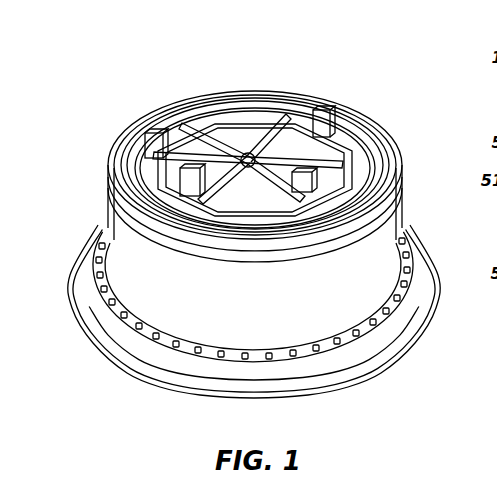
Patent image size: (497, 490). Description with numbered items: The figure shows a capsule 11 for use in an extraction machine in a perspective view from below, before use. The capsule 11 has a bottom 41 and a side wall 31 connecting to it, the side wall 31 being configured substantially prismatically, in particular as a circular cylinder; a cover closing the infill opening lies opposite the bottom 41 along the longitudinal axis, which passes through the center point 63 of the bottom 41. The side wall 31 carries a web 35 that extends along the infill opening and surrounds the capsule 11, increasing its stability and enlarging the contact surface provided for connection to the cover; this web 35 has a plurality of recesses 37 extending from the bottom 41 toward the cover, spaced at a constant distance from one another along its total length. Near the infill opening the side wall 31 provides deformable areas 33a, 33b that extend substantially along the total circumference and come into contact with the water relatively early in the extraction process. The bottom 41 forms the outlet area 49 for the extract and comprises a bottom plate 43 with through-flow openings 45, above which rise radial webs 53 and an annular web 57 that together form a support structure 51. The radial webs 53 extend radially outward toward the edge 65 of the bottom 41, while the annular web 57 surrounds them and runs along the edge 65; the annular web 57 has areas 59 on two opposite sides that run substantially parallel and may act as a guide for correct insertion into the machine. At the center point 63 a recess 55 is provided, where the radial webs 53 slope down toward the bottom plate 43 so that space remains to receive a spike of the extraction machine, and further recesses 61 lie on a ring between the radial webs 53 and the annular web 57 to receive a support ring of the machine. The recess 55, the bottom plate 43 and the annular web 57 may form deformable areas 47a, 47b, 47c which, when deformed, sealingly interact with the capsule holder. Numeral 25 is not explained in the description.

The capsule 11 is at (133, 115).
The base flange 25 is at (357, 368).
The side wall 31 is at (413, 240).
The deformable area 33a is at (375, 256).
The deformable area 33b is at (403, 298).
The web 35 is at (383, 335).
The recesses 37 is at (307, 358).
The bottom 41 is at (268, 110).
The bottom plate 43 is at (362, 125).
The through-flow openings 45 is at (350, 115).
The deformable area 47a is at (292, 103).
The deformable area 47b is at (336, 105).
The deformable area 47c is at (372, 178).
The outlet area 49 is at (243, 128).
The support structure 51 is at (385, 146).
The radial webs 53 is at (200, 222).
The recess 55 is at (205, 125).
The annular web 57 is at (358, 172).
The areas 59 is at (368, 188).
The further recesses 61 is at (135, 148).
The center point 63 is at (150, 165).
The edge 65 is at (115, 165).